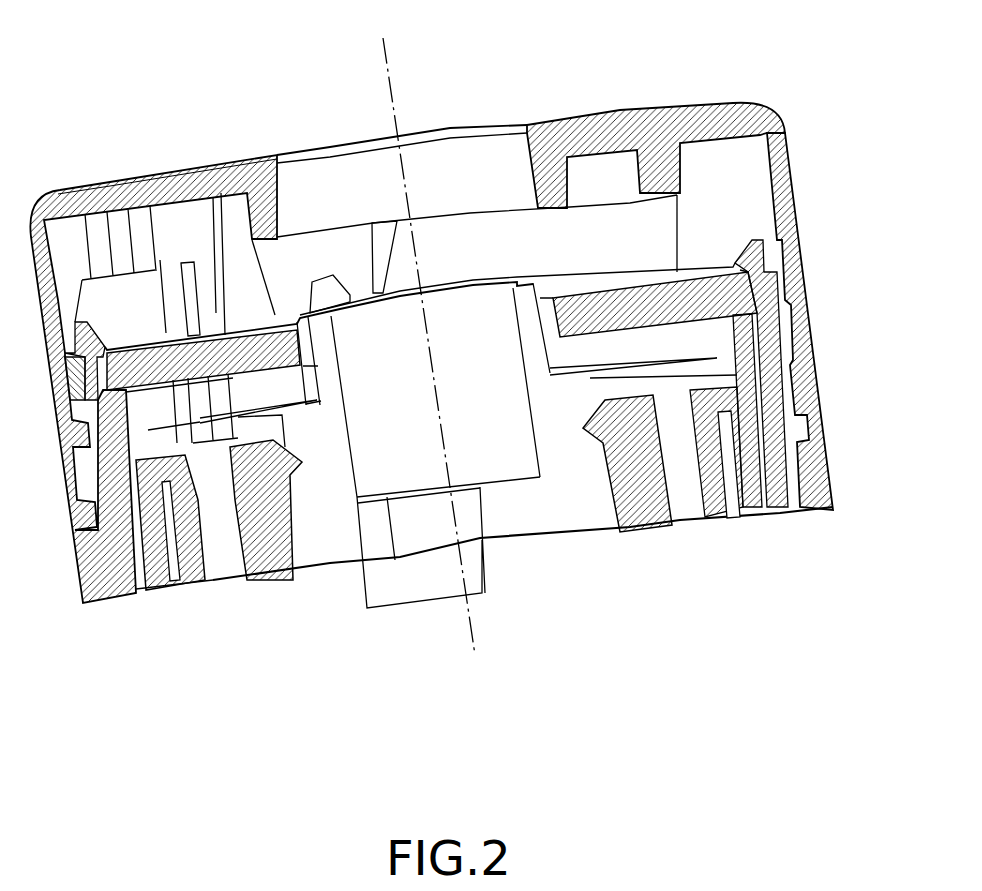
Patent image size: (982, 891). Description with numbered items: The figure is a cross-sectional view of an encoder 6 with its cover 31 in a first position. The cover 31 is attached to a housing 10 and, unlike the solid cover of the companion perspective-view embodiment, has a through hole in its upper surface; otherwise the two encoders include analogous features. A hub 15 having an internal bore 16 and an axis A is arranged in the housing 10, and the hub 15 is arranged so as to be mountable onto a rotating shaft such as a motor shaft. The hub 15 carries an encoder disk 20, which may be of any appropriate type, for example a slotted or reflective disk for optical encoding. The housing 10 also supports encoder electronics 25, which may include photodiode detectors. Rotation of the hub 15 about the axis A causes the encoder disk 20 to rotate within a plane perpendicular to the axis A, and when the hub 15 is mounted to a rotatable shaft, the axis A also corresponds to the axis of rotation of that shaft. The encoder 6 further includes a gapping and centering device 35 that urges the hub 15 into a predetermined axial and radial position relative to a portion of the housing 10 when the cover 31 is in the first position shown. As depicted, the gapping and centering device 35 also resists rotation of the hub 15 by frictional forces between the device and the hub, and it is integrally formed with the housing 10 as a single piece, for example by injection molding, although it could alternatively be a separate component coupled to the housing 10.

The encoder 6 is at (133, 158).
The cover 31 is at (658, 130).
The housing 10 is at (807, 468).
The encoder electronics 25 is at (740, 292).
The hub 15 is at (563, 450).
The internal bore 16 is at (356, 480).
The encoder disk 20 is at (187, 430).
The gapping and centering device 35 is at (652, 508).
The axis A is at (478, 652).